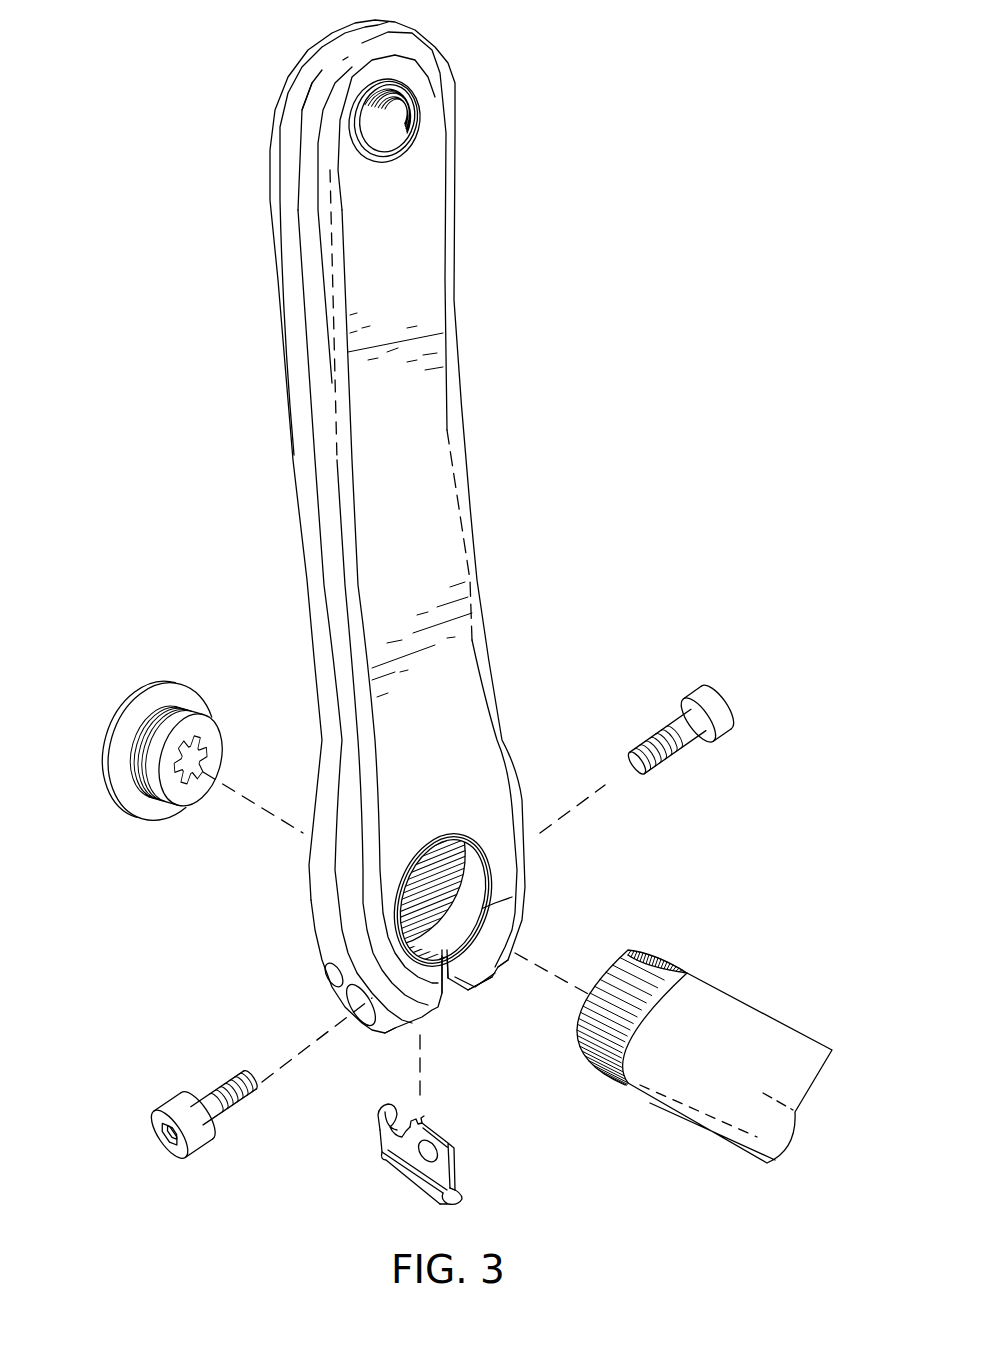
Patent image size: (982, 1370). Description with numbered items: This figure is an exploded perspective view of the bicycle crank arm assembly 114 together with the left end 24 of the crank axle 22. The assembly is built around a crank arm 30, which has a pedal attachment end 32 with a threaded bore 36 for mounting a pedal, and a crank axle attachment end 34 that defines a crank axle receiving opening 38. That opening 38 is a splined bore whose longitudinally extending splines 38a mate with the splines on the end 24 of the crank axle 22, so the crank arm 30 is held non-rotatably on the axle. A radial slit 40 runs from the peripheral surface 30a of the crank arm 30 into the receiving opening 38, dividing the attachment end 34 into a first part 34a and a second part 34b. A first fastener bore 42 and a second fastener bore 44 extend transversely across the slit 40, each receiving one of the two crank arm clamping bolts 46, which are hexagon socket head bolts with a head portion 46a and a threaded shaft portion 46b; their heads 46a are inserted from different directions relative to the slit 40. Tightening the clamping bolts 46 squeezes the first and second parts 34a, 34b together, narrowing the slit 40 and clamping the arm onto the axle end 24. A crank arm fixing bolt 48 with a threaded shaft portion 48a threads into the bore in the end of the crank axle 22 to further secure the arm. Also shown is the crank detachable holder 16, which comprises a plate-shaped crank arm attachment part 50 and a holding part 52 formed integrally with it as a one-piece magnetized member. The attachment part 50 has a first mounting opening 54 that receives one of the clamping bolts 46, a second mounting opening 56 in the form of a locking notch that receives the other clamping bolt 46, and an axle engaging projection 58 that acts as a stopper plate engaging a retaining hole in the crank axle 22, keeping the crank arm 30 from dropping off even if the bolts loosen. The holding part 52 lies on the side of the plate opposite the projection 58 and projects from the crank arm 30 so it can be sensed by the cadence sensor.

The crank arm assembly 114 is at (538, 474).
The crank arm 30 is at (412, 256).
The peripheral surface 30a is at (493, 972).
The pedal attachment end 32 is at (345, 142).
The crank axle attachment end 34 is at (392, 900).
The first part 34a is at (430, 1010).
The second part 34b is at (468, 972).
The threaded bore 36 is at (408, 125).
The crank axle receiving opening 38 is at (457, 920).
The splines 38a is at (465, 897).
The slit 40 is at (447, 1003).
The first fastener bore 42 is at (372, 1010).
The second fastener bore 44 is at (325, 982).
The crank arm clamping bolt 46 is at (450, 934).
The head portion 46a is at (714, 705).
The threaded shaft portion 46b is at (670, 766).
The crank arm fixing bolt 48 is at (143, 743).
The threaded shaft portion 48a is at (130, 768).
The crank axle 22 is at (704, 1050).
The end 24 is at (600, 1068).
The crank detachable holder 16 is at (428, 1162).
The crank arm attachment part 50 is at (457, 1175).
The holding part 52 is at (460, 1202).
The first mounting opening 54 is at (425, 1158).
The second mounting opening 56 is at (385, 1133).
The axle engaging projection 58 is at (420, 1122).